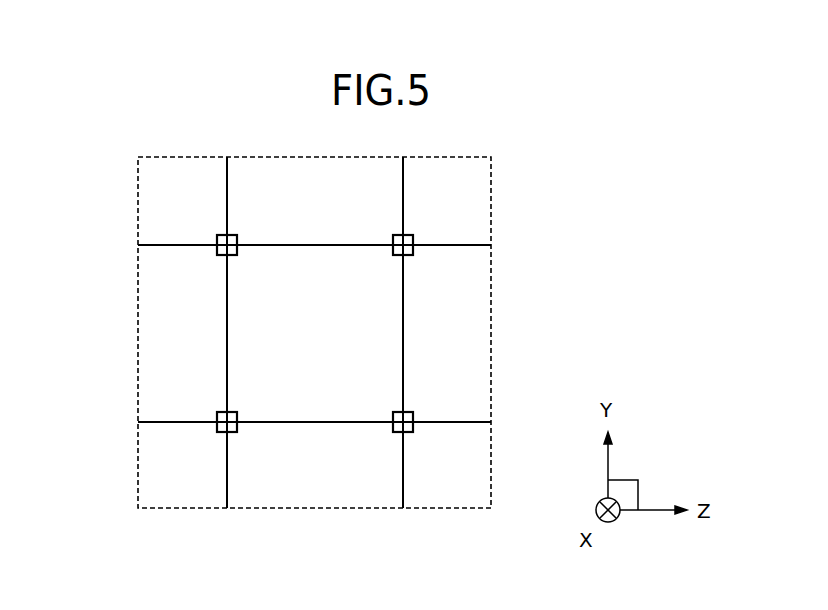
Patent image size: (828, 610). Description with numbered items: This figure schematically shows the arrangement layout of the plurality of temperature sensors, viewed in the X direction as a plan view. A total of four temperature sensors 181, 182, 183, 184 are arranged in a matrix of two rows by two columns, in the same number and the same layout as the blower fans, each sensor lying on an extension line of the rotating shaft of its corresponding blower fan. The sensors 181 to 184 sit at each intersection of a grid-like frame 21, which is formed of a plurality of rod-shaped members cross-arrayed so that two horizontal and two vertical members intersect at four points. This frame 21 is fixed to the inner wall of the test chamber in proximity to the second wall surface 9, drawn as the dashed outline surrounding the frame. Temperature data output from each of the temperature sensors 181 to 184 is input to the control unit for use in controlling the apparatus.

The second wall surface 9 is at (136, 161).
The grid-like frame 21 is at (296, 247).
The temperature sensor 181 is at (252, 223).
The temperature sensor 182 is at (428, 223).
The temperature sensor 183 is at (252, 400).
The temperature sensor 184 is at (428, 400).